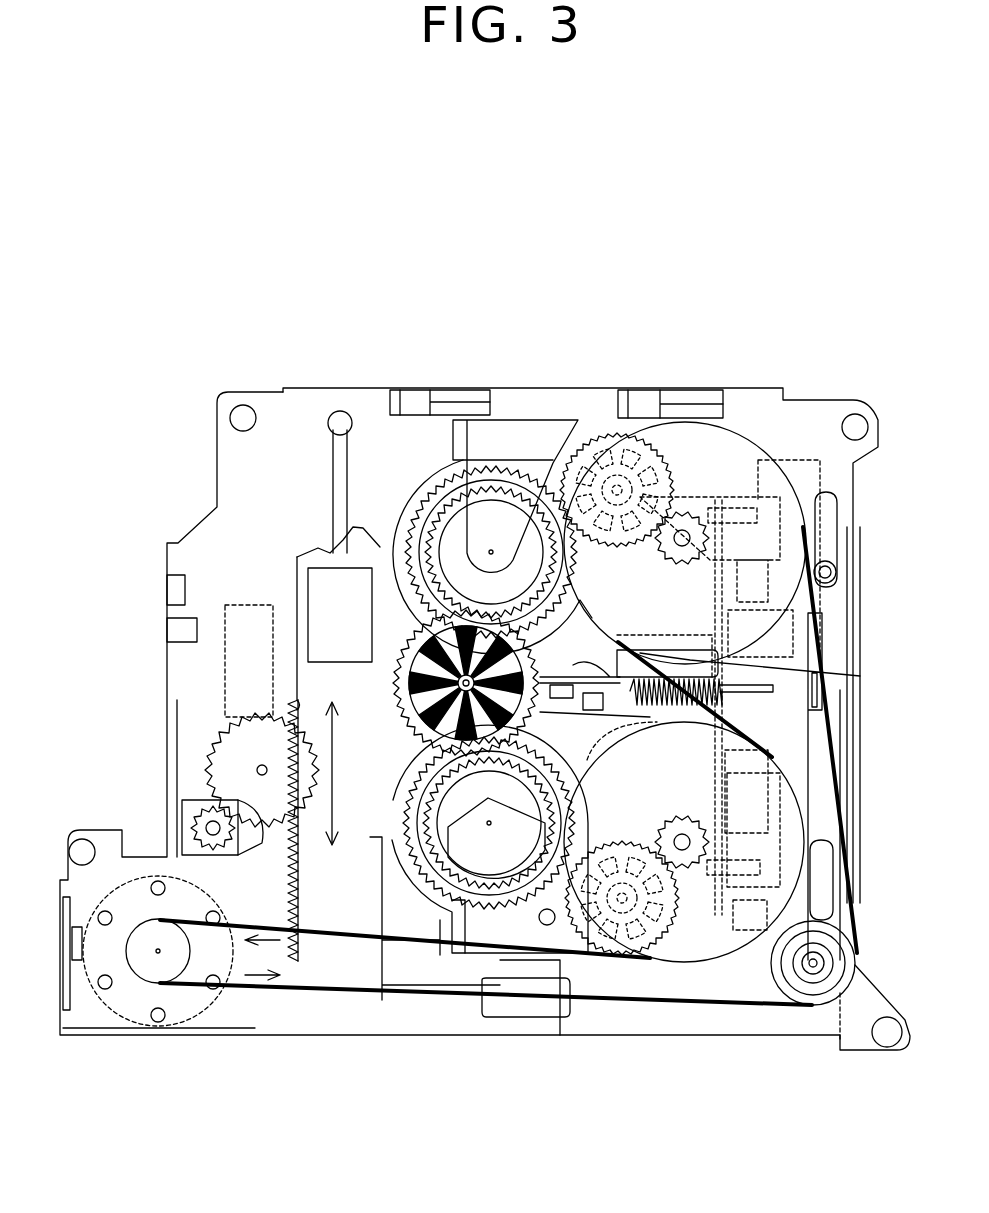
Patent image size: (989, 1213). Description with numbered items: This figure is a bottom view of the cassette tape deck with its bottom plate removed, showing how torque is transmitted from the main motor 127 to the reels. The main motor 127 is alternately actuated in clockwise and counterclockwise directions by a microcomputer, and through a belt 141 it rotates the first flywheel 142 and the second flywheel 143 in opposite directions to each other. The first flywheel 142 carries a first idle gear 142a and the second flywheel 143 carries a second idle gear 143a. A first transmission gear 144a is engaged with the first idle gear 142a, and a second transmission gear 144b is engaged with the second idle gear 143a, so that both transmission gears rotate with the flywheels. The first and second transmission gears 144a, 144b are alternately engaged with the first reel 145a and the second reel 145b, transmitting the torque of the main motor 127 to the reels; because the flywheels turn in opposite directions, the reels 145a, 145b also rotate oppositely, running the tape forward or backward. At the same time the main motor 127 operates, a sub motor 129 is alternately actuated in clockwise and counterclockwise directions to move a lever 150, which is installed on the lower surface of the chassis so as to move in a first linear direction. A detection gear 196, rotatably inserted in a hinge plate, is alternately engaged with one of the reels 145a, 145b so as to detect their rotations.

The main motor 127 is at (168, 1005).
The sub motor 129 is at (225, 663).
The belt 141 is at (283, 995).
The first flywheel 142 is at (767, 447).
The first idle gear 142a is at (690, 517).
The second flywheel 143 is at (742, 958).
The second idle gear 143a is at (690, 862).
The first transmission gear 144a is at (603, 441).
The second transmission gear 144b is at (588, 907).
The first reel 145a is at (430, 527).
The second reel 145b is at (442, 872).
The lever 150 is at (307, 553).
The detection gear 196 is at (397, 677).